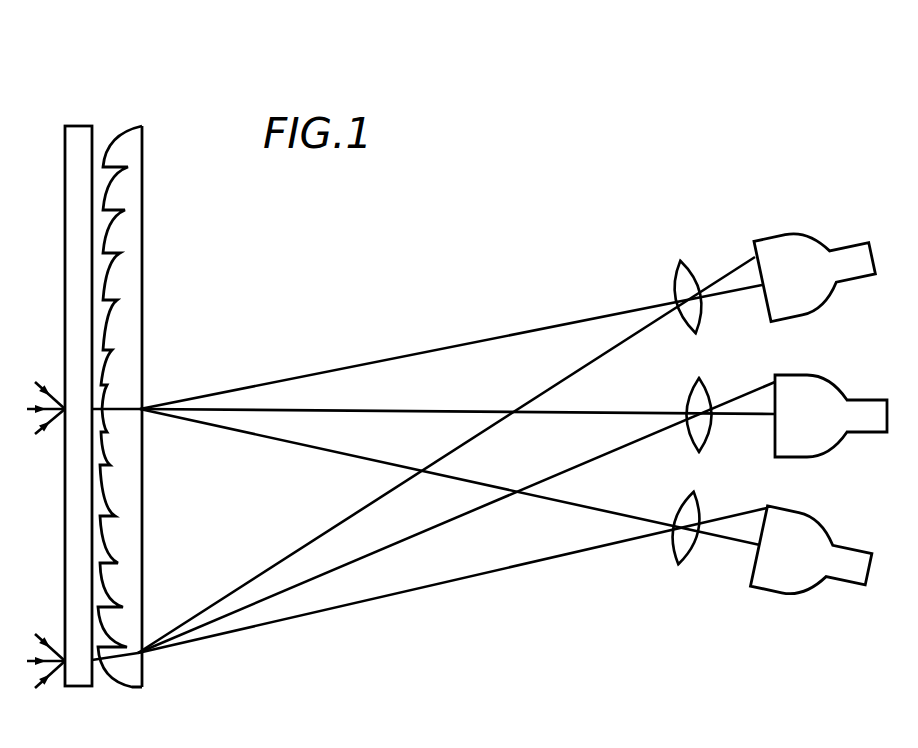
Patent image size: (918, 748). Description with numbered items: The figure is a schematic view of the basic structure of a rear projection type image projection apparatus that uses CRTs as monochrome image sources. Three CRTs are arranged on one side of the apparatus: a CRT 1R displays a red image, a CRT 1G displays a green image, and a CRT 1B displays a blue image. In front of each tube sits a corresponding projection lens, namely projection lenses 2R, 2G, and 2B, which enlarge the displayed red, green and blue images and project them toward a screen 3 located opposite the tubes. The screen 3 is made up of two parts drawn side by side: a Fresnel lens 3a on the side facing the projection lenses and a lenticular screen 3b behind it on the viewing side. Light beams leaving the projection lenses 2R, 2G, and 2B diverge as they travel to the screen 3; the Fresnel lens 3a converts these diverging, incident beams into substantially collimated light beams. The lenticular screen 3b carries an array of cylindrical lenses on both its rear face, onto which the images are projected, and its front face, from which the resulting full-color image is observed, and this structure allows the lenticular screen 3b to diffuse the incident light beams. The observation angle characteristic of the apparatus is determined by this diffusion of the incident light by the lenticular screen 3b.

The screen 3 is at (147, 69).
The Fresnel lens 3a is at (130, 138).
The lenticular screen 3b is at (78, 135).
The CRT 1R is at (813, 258).
The CRT 1G is at (868, 398).
The CRT 1B is at (853, 590).
The projection lens 2R is at (680, 262).
The projection lens 2G is at (708, 382).
The projection lens 2B is at (682, 562).